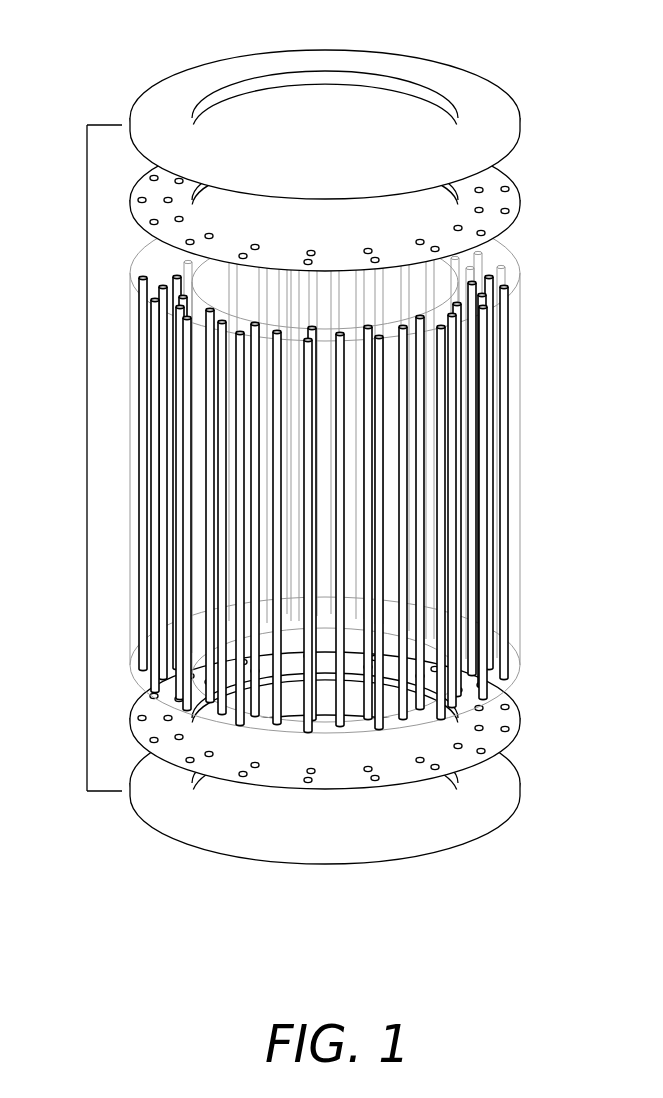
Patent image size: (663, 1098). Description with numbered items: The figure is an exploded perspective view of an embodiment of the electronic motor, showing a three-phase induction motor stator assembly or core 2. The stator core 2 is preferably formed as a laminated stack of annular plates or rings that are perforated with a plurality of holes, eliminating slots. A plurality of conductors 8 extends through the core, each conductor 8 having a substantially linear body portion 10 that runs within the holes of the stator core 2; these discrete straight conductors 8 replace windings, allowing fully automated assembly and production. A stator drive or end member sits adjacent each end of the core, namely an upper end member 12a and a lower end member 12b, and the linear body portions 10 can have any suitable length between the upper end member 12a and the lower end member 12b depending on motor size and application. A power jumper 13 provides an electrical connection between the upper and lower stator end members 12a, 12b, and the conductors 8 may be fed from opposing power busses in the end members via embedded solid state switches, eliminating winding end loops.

The stator assembly or core 2 is at (553, 314).
The conductors 8 is at (519, 531).
The linear body portion 10 is at (507, 472).
The upper end member 12a is at (493, 82).
The lower end member 12b is at (490, 833).
The power jumper 13 is at (87, 590).